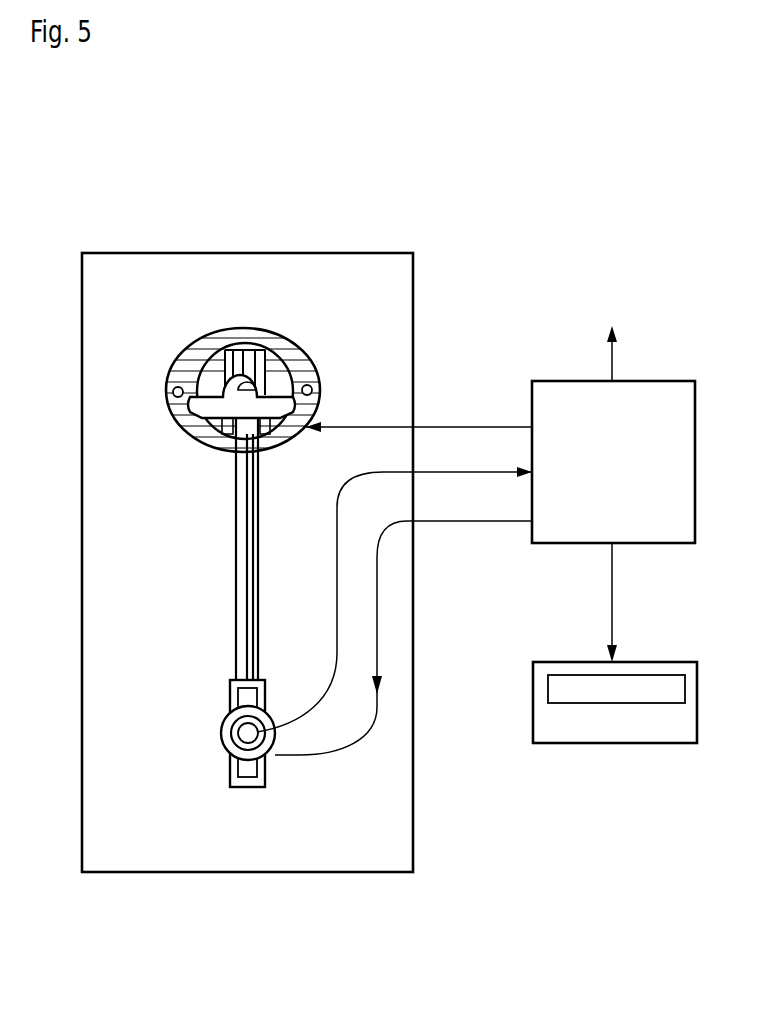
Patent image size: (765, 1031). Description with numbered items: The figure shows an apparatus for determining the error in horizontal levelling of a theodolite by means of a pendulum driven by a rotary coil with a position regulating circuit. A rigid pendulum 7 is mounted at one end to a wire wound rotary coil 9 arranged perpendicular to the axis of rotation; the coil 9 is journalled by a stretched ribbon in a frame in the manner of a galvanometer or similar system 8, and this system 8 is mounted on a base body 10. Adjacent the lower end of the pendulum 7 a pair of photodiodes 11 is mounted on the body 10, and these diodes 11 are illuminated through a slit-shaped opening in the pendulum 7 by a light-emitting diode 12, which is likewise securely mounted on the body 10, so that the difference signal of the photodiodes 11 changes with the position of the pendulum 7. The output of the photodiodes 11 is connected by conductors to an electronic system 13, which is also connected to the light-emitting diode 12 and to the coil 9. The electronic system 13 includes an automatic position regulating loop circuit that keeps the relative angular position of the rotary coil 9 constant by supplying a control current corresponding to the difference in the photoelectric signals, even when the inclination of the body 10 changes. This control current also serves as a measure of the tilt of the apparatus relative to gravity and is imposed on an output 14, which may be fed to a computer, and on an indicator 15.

The rigid pendulum 7 is at (244, 562).
The galvanometer system 8 is at (300, 313).
The wire wound rotary coil 9 is at (236, 350).
The base body 10 is at (92, 554).
The photodiodes 11 is at (230, 750).
The light-emitting diode 12 is at (232, 730).
The electronic system 13 is at (548, 400).
The output 14 is at (614, 350).
The indicator 15 is at (558, 736).